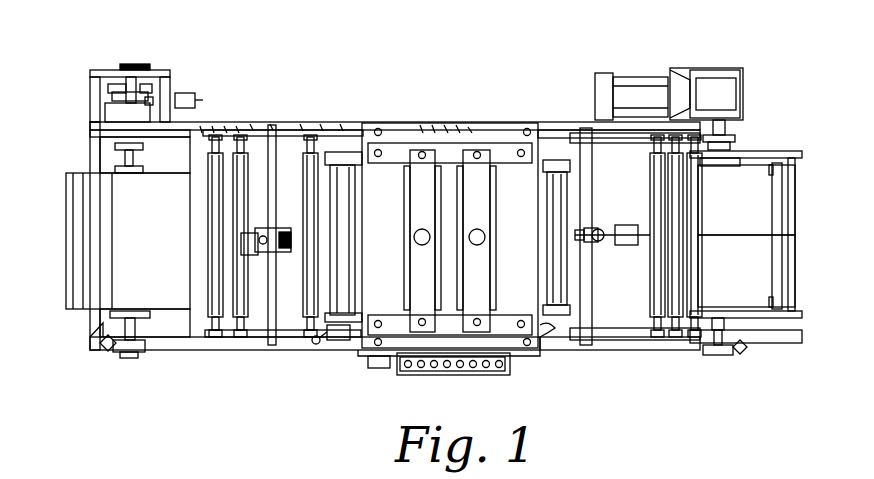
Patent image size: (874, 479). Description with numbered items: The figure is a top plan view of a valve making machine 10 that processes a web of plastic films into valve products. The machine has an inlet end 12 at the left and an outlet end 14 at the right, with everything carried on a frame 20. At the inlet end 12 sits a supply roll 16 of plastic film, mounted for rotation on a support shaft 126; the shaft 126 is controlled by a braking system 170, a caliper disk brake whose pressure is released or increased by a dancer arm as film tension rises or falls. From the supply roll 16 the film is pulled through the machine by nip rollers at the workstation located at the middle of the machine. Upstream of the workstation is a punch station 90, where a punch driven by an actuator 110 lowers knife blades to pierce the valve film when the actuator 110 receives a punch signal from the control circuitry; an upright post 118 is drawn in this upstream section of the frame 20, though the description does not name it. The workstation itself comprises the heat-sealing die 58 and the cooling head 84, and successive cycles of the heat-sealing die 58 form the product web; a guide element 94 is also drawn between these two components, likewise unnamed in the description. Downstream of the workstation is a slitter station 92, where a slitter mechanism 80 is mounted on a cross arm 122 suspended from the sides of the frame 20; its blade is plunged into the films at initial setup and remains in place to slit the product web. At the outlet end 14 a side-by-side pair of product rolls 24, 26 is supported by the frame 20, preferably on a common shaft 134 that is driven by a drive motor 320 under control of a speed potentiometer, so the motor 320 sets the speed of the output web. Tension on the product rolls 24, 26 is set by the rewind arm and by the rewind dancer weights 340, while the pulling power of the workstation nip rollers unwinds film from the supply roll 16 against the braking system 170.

The valve making machine 10 is at (505, 117).
The inlet end 12 is at (87, 165).
The outlet end 14 is at (735, 150).
The supply roll 16 is at (75, 259).
The frame 20 is at (590, 352).
The product roll 24 is at (762, 265).
The product roll 26 is at (755, 206).
The heat-sealing die 58 is at (410, 258).
The slitter mechanism 80 is at (599, 226).
The slitter station 92 is at (579, 235).
The cooling head 84 is at (500, 254).
The punch station 90 is at (280, 226).
The guide rails 94 is at (470, 194).
The actuator 110 is at (398, 378).
The vertical post 118 is at (266, 134).
The cross arm 122 is at (594, 146).
The support shaft 126 is at (140, 327).
The common shaft 134 is at (738, 336).
The braking system 170 is at (86, 68).
The drive motor 320 is at (643, 78).
The rewind dancer weights 340 is at (626, 247).